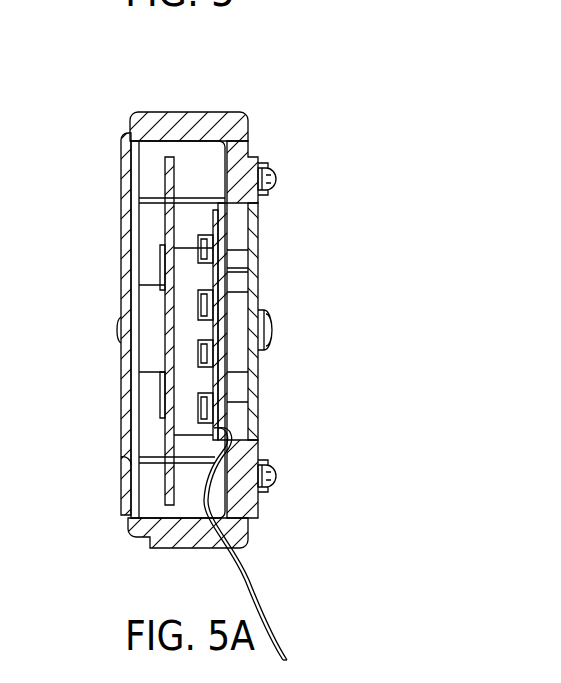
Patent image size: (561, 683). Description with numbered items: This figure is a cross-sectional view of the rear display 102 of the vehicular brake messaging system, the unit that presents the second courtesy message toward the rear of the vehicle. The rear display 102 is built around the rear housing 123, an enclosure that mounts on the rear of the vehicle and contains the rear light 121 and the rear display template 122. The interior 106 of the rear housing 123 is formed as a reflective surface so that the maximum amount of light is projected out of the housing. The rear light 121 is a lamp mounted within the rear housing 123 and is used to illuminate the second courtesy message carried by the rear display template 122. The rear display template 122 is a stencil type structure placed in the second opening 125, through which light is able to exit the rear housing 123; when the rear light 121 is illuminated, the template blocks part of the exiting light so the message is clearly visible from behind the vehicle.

The rear display 102 is at (364, 81).
The interior 106 is at (200, 157).
The rear housing 123 is at (176, 132).
The rear light 121 is at (208, 288).
The second opening 125 is at (118, 280).
The rear display template 122 is at (128, 305).